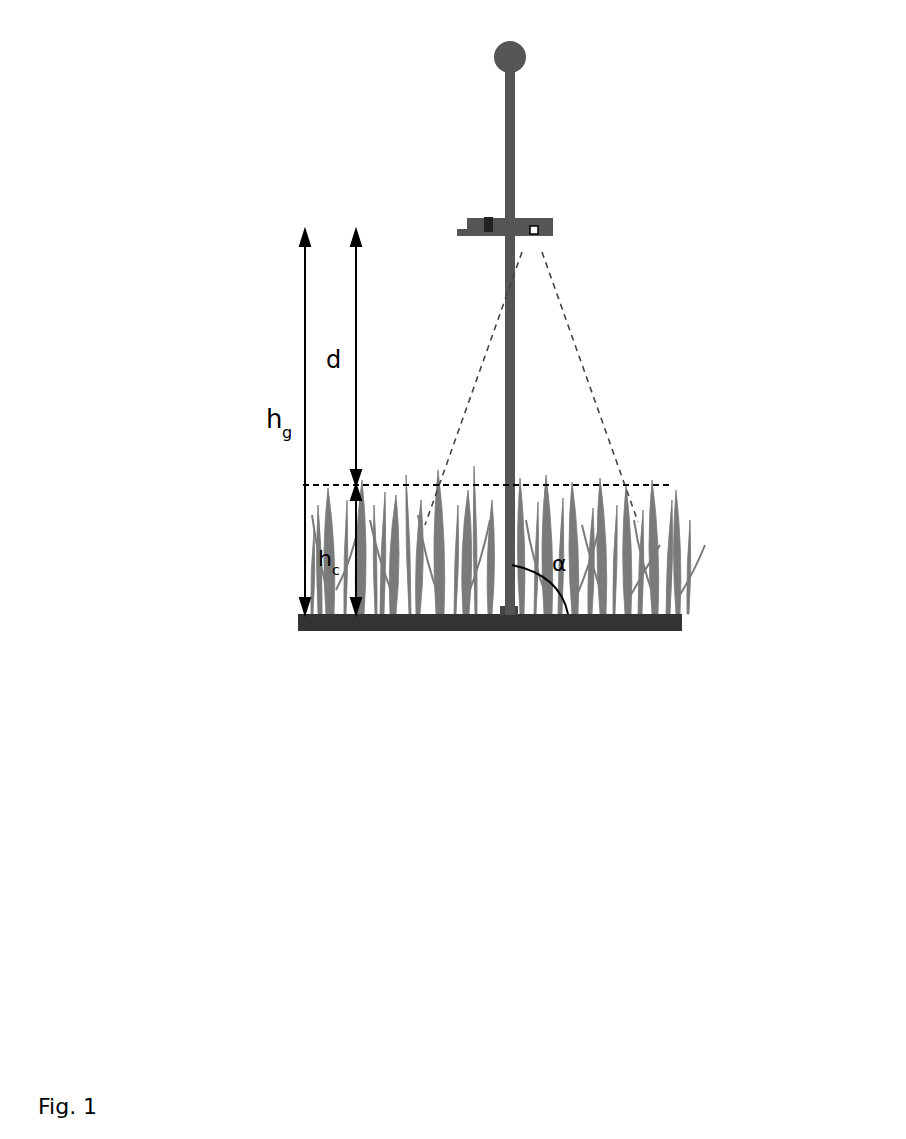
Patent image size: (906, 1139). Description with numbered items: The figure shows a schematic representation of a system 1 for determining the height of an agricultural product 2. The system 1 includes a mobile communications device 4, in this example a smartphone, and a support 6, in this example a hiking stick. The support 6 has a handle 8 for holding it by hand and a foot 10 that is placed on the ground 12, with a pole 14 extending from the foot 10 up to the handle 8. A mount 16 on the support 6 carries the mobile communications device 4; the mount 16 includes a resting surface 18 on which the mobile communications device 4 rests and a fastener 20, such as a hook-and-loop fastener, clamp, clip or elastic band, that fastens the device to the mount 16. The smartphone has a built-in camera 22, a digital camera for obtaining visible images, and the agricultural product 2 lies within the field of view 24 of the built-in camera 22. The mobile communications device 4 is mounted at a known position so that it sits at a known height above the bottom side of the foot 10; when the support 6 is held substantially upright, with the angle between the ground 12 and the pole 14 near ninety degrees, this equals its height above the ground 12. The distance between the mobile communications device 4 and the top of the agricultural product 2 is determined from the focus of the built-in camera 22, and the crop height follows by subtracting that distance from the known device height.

The system 1 is at (683, 95).
The agricultural product 2 is at (680, 555).
The mobile communications device 4 is at (523, 218).
The support 6 is at (503, 138).
The handle 8 is at (517, 50).
The foot 10 is at (527, 632).
The ground 12 is at (678, 614).
The pole 14 is at (512, 110).
The mount 16 is at (477, 233).
The resting surface 18 is at (458, 220).
The fastener 20 is at (488, 217).
The built-in camera 22 is at (538, 234).
The field of view 24 is at (552, 382).